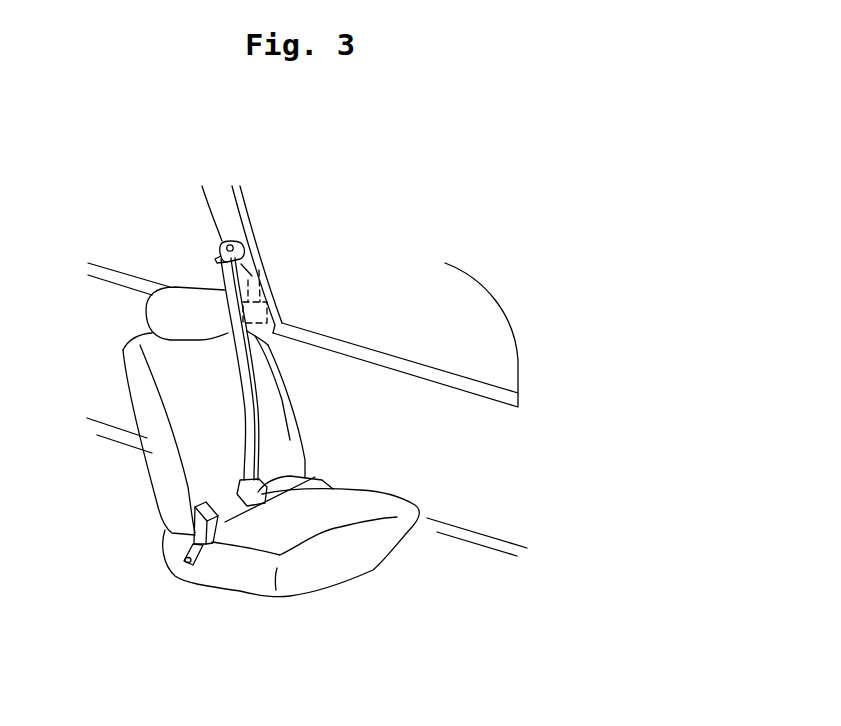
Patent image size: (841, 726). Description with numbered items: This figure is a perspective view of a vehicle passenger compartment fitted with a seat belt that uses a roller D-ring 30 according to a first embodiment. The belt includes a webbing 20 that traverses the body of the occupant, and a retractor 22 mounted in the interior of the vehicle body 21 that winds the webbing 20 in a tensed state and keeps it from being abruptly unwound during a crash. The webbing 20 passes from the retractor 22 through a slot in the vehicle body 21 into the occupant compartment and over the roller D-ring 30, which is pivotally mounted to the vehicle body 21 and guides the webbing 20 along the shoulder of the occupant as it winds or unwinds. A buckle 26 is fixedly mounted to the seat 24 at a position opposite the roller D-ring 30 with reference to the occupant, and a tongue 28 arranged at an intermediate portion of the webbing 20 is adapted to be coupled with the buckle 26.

The webbing 20 is at (221, 278).
The vehicle body 21 is at (245, 203).
The retractor 22 is at (258, 304).
The seat 24 is at (190, 577).
The buckle 26 is at (197, 530).
The tongue 28 is at (260, 505).
The roller D-ring 30 is at (241, 243).